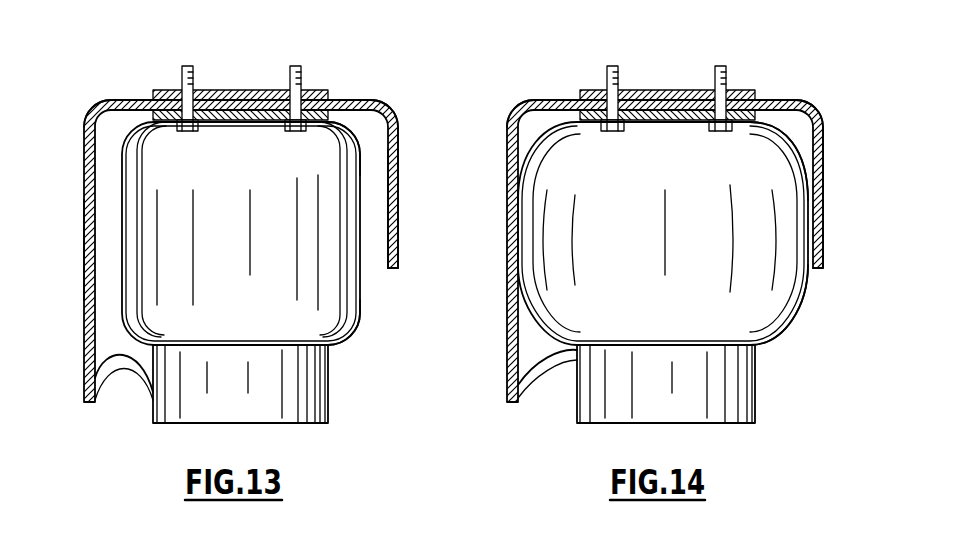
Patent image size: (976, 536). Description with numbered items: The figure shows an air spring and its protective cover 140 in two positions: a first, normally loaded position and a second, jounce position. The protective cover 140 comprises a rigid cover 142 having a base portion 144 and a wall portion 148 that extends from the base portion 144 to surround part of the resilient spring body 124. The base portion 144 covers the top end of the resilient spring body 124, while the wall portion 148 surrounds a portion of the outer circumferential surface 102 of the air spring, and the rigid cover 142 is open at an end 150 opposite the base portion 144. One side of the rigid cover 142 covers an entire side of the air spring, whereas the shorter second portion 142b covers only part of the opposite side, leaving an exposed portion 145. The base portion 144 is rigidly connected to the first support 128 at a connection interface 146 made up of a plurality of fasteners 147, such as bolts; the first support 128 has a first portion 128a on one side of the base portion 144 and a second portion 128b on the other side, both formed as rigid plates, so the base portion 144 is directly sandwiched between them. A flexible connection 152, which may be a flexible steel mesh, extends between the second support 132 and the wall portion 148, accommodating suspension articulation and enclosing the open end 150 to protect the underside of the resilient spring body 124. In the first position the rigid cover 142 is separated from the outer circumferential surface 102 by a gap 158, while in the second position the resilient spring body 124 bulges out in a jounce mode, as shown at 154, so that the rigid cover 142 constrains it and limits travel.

In FIG. 13, the outer circumferential surface 102 is at (279, 230).
In FIG. 14, the outer circumferential surface 102 is at (664, 218).
In FIG. 13, the resilient spring body 124 is at (367, 119).
In FIG. 14, the resilient spring body 124 is at (799, 130).
In FIG. 13, the first support 128 is at (240, 97).
In FIG. 14, the first support 128 is at (663, 92).
In FIG. 13, the first portion of the first support 128a is at (240, 91).
In FIG. 13, the second portion of the first support 128b is at (240, 122).
In FIG. 13, the second support 132 is at (288, 407).
In FIG. 14, the second support 132 is at (708, 407).
In FIG. 13, the protective cover 140 is at (246, 231).
In FIG. 14, the protective cover 140 is at (688, 220).
In FIG. 13, the rigid cover 142 is at (97, 105).
In FIG. 14, the rigid cover 142 is at (540, 103).
In FIG. 13, the second portion of the rigid cover 142b is at (400, 140).
In FIG. 13, the base portion 144 is at (340, 101).
In FIG. 14, the base portion 144 is at (767, 103).
In FIG. 13, the exposed portion 145 is at (348, 340).
In FIG. 14, the exposed portion 145 is at (797, 308).
In FIG. 13, the connection interface 146 is at (229, 74).
In FIG. 14, the connection interface 146 is at (612, 56).
In FIG. 13, the fasteners 147 is at (182, 74).
In FIG. 13, the wall portion 148 is at (405, 170).
In FIG. 13, the open end 150 is at (379, 255).
In FIG. 13, the flexible connection 152 is at (125, 362).
In FIG. 14, the flexible connection 152 is at (553, 370).
In FIG. 14, the bulged-out spring body in jounce mode 154 is at (822, 224).
In FIG. 13, the gap 158 is at (114, 233).